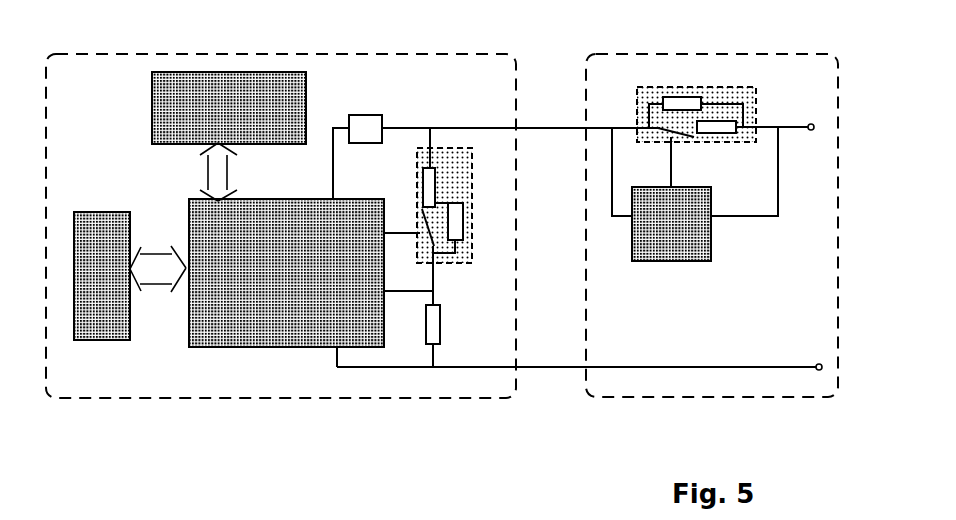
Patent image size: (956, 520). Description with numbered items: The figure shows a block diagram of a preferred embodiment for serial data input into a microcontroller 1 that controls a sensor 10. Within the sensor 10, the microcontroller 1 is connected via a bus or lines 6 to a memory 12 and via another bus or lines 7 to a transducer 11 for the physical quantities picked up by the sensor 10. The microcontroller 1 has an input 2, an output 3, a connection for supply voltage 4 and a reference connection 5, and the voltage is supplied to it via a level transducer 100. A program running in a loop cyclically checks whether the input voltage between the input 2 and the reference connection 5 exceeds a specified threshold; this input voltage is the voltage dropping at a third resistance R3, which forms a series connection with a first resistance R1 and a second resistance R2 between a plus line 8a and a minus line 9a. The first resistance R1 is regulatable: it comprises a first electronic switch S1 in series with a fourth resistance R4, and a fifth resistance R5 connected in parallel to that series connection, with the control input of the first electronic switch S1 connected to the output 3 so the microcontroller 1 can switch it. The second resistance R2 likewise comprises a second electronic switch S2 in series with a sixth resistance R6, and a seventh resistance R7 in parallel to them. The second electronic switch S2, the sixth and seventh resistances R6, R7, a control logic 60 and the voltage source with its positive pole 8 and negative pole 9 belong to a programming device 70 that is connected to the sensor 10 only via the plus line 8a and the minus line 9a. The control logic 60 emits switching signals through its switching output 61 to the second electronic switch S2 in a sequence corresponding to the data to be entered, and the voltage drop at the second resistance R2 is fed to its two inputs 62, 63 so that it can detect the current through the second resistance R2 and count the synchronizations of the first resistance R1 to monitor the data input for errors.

The sensor 10 is at (152, 402).
The programming device 70 is at (660, 398).
The transducer 11 is at (175, 100).
The memory 12 is at (97, 228).
The microcontroller 1 is at (262, 291).
The connection for supply voltage 4 is at (327, 214).
The output 3 is at (387, 236).
The input 2 is at (396, 294).
The reference connection 5 is at (338, 341).
The bus or lines 7 is at (205, 172).
The bus or lines 6 is at (158, 280).
The level transducer 100 is at (366, 119).
The first resistance R1 is at (473, 150).
The fourth resistance R4 is at (436, 181).
The fifth resistance R5 is at (463, 224).
The first electronic switch S1 is at (422, 229).
The third resistance R3 is at (440, 325).
The plus line 8a is at (556, 126).
The minus line 9a is at (556, 366).
The second resistance R2 is at (757, 106).
The seventh resistance R7 is at (672, 97).
The sixth resistance R6 is at (728, 121).
The second electronic switch S2 is at (688, 136).
The positive pole 8 is at (812, 135).
The negative pole 9 is at (819, 364).
The control logic 60 is at (710, 262).
The switching output 61 is at (660, 211).
The input 62 is at (688, 231).
The input 63 is at (646, 231).